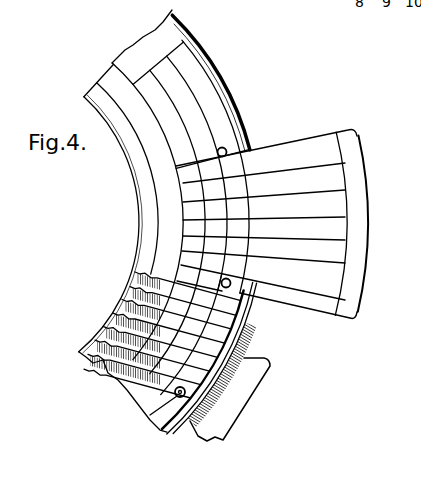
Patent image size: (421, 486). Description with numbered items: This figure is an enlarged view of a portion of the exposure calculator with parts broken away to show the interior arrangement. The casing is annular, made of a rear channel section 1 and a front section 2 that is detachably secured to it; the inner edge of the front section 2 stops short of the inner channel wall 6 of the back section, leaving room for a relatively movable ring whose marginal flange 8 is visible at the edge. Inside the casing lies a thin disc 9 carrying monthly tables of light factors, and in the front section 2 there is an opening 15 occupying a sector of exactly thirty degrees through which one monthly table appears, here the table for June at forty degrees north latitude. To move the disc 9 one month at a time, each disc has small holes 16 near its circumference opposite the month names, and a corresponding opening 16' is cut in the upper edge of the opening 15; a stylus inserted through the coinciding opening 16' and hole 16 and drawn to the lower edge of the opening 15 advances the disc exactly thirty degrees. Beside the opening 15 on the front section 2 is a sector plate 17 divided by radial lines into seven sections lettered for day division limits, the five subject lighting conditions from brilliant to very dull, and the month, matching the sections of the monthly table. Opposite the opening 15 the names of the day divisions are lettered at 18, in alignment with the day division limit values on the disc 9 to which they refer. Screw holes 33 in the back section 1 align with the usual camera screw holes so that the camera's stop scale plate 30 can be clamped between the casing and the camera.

The rear channel section 1 is at (115, 367).
The front section 2 is at (163, 32).
The inner channel wall 6 is at (98, 334).
The marginal flange 8 is at (146, 172).
The disc 9 is at (135, 296).
The opening 15 is at (209, 283).
The hole 16 is at (254, 306).
The opening 16' is at (253, 137).
The sector plate 17 is at (346, 128).
The day division names 18 is at (222, 85).
The stop scale plate 30 is at (258, 380).
The screw hole 33 is at (150, 416).